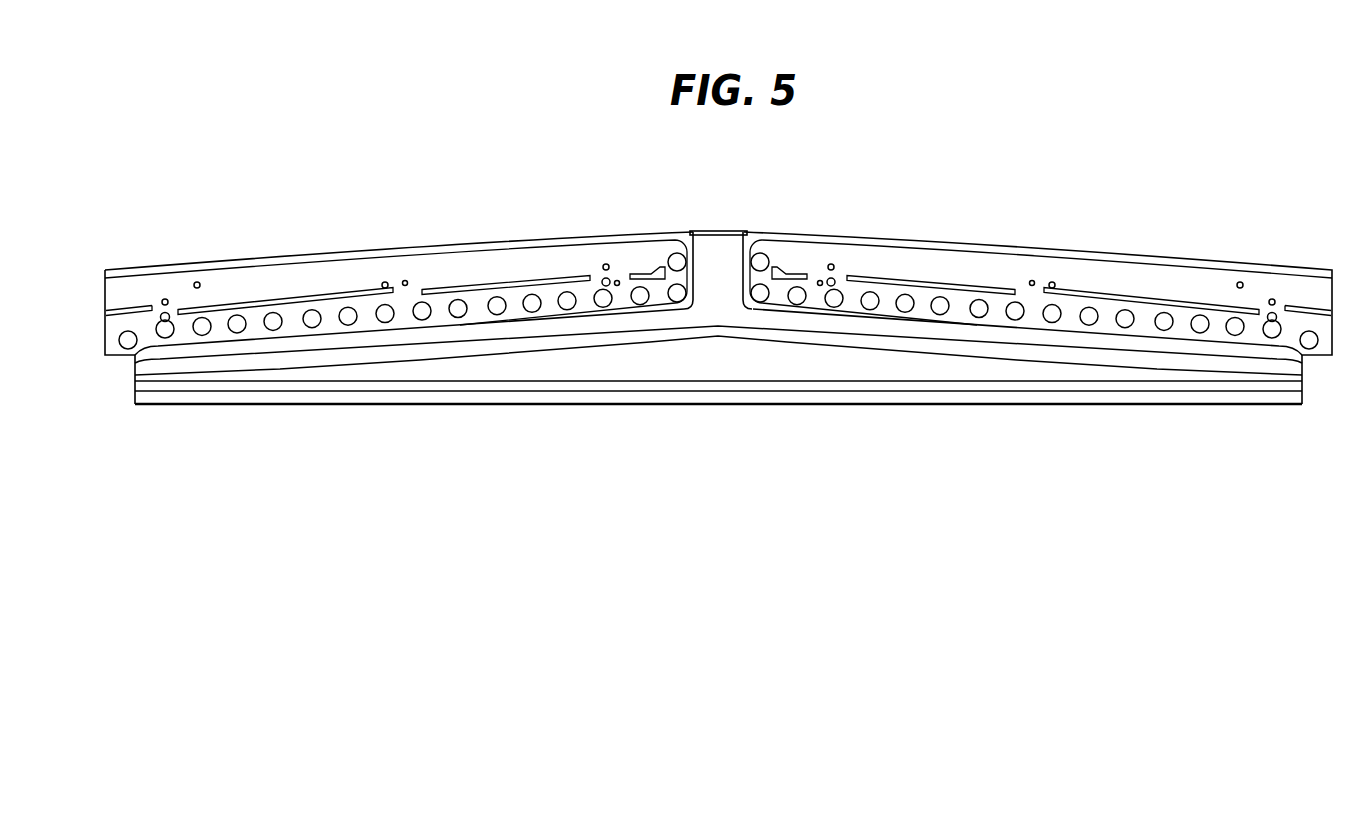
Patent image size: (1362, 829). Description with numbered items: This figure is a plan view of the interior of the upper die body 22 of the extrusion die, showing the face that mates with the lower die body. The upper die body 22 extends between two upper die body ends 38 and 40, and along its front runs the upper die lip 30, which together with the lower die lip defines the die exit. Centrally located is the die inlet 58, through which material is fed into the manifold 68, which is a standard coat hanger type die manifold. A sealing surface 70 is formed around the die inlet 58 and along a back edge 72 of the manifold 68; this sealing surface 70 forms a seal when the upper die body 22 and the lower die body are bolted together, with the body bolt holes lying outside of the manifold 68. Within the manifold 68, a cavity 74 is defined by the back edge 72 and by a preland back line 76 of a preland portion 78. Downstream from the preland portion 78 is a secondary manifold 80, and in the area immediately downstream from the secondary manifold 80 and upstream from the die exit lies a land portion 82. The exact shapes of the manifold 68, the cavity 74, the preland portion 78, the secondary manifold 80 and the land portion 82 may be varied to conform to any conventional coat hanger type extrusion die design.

The upper die body 22 is at (459, 268).
The upper die lip 30 is at (1241, 405).
The upper die body end 38 is at (1325, 288).
The upper die body end 40 is at (104, 288).
The die inlet 58 is at (713, 232).
The manifold 68 is at (727, 302).
The sealing surface 70 is at (670, 236).
The back edge 72 is at (582, 316).
The cavity 74 is at (800, 320).
The preland back line 76 is at (866, 327).
The preland portion 78 is at (944, 366).
The secondary manifold 80 is at (1039, 368).
The land portion 82 is at (1124, 393).